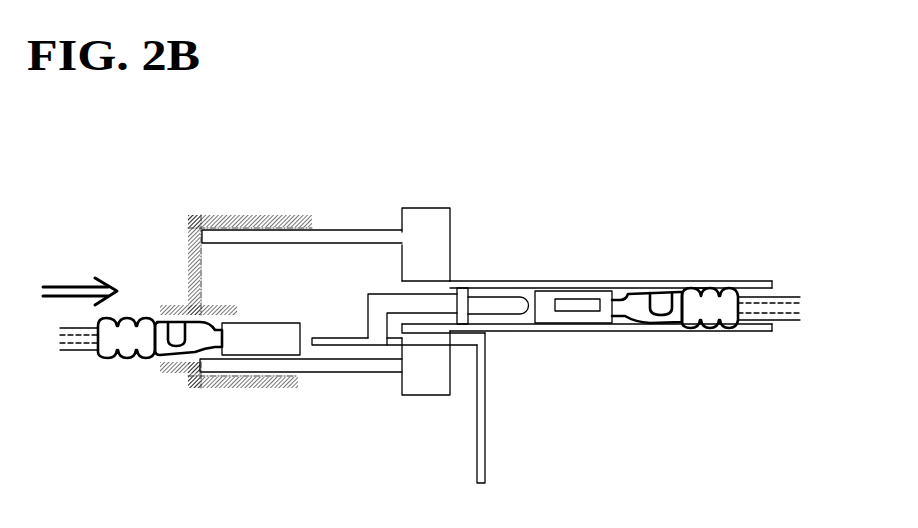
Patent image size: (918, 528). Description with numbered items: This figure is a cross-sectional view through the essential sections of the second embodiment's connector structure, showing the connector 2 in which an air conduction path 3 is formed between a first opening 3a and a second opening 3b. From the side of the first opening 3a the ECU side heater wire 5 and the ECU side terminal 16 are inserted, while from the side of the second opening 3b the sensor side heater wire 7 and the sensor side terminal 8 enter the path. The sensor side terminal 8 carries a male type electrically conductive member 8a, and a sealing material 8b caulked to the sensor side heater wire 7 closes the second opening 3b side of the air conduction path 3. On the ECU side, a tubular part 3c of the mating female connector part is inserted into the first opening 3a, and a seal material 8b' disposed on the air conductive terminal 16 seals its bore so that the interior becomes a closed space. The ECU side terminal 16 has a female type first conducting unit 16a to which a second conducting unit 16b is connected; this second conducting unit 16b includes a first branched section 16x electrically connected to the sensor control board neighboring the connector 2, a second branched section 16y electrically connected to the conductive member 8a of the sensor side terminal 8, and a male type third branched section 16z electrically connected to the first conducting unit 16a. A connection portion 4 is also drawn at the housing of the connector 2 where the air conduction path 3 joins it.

The connector 2 is at (427, 208).
The air conduction path 3 is at (622, 288).
The first opening 3a is at (212, 258).
The second opening 3b is at (775, 291).
The tubular part 3c is at (698, 287).
The connection portion 4 is at (406, 287).
The ECU side heater wire 5 is at (63, 351).
The sensor side heater wire 7 is at (760, 322).
The sensor side terminal 8 is at (628, 323).
The electrically conductive member (male type) 8a is at (554, 289).
The sealing material 8b is at (710, 355).
The seal material 8b' is at (113, 369).
The ECU side terminal 16 is at (160, 356).
The first conducting unit 16a is at (290, 323).
The second conducting unit 16b is at (358, 316).
The first branched section 16x is at (487, 346).
The second branched section 16y is at (511, 295).
The third branched section (male type) 16z is at (338, 346).